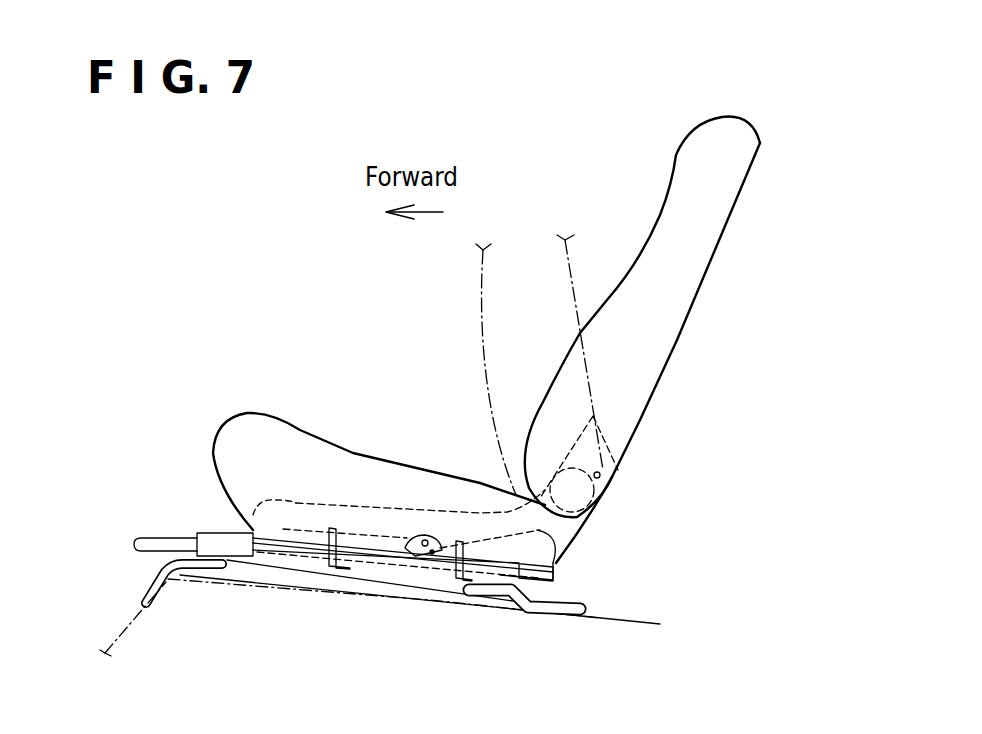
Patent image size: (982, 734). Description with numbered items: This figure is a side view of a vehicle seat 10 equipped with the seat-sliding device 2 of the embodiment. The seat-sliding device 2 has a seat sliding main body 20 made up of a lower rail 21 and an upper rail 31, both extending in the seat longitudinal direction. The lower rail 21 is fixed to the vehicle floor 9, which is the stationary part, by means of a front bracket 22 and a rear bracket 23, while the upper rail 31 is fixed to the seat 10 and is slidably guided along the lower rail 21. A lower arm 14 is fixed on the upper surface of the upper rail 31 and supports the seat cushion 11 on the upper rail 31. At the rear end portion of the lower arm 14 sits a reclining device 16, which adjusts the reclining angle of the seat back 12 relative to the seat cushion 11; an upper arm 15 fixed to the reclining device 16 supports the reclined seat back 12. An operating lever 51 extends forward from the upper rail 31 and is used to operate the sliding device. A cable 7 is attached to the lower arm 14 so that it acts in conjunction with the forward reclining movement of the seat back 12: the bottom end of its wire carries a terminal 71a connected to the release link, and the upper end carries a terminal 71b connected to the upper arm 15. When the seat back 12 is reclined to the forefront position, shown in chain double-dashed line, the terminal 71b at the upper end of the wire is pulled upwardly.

The seat-sliding device 2 is at (134, 445).
The cable 7 is at (566, 556).
The vehicle floor 9 is at (639, 638).
The seat 10 is at (376, 306).
The seat cushion 11 is at (260, 423).
The seat back 12 is at (670, 200).
The lower arm 14 is at (283, 528).
The upper arm 15 is at (612, 447).
The reclining device 16 is at (541, 460).
The seat sliding main body 20 is at (188, 528).
The lower rail 21 is at (268, 562).
The front bracket 22 is at (188, 572).
The rear bracket 23 is at (540, 612).
The upper rail 31 is at (262, 515).
The operating lever 51 is at (148, 537).
The terminal 71a is at (427, 553).
The terminal 71b is at (603, 474).